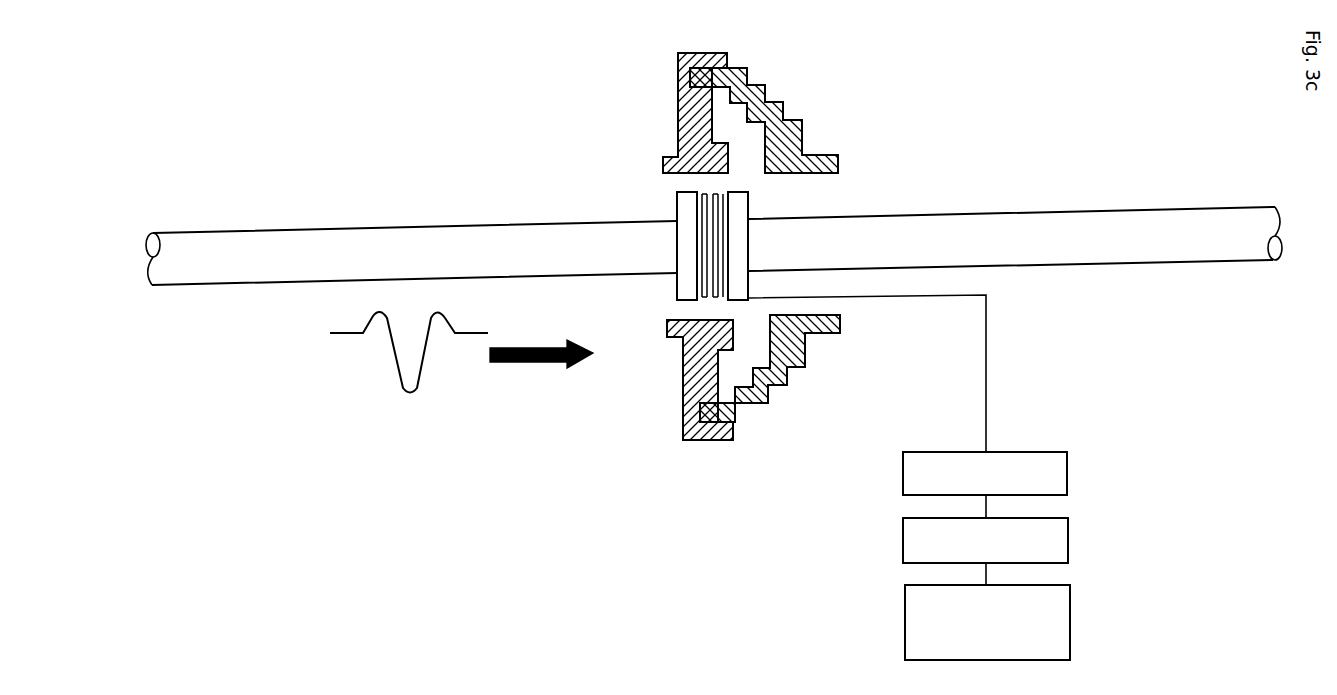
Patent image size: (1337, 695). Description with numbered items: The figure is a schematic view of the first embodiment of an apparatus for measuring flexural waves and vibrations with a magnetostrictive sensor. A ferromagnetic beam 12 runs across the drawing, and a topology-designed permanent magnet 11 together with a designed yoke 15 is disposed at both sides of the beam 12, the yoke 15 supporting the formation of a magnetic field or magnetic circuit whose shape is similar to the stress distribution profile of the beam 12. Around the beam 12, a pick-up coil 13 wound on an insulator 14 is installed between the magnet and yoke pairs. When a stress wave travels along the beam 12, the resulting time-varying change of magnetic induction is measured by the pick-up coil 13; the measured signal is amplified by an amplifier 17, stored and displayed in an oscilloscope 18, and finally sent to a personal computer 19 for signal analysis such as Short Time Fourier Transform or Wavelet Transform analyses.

The permanent magnet 11 is at (802, 128).
The beam 12 is at (1125, 217).
The pick-up coil 13 is at (713, 192).
The insulator 14 is at (677, 202).
The yoke 15 is at (678, 102).
The amplifier 17 is at (1068, 473).
The oscilloscope 18 is at (1070, 538).
The personal computer 19 is at (1072, 622).